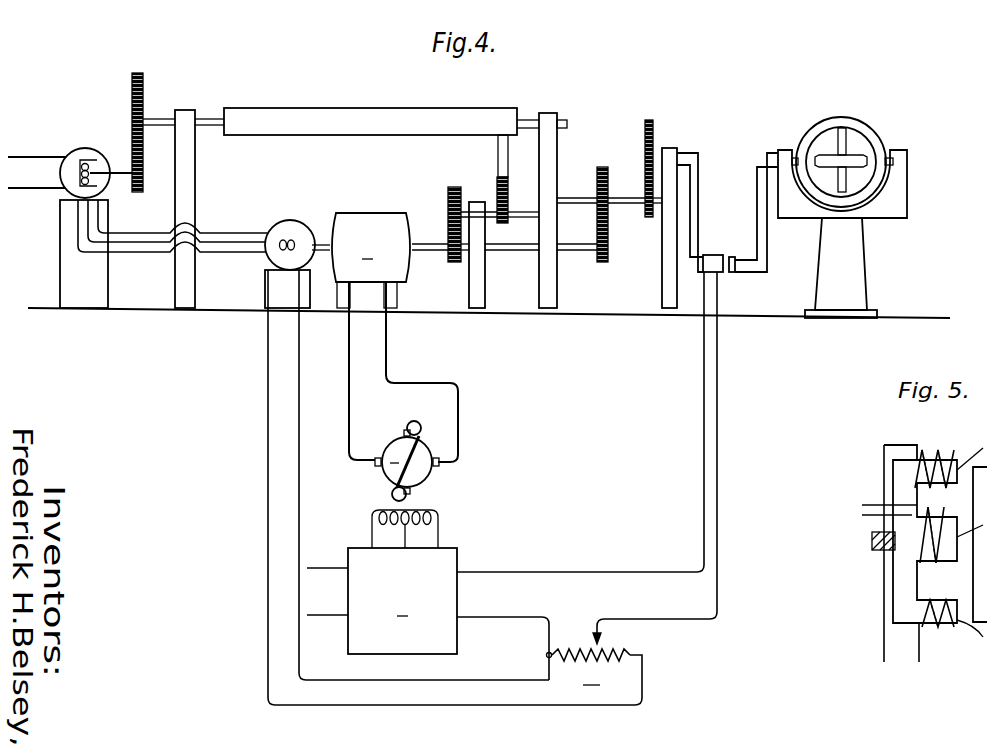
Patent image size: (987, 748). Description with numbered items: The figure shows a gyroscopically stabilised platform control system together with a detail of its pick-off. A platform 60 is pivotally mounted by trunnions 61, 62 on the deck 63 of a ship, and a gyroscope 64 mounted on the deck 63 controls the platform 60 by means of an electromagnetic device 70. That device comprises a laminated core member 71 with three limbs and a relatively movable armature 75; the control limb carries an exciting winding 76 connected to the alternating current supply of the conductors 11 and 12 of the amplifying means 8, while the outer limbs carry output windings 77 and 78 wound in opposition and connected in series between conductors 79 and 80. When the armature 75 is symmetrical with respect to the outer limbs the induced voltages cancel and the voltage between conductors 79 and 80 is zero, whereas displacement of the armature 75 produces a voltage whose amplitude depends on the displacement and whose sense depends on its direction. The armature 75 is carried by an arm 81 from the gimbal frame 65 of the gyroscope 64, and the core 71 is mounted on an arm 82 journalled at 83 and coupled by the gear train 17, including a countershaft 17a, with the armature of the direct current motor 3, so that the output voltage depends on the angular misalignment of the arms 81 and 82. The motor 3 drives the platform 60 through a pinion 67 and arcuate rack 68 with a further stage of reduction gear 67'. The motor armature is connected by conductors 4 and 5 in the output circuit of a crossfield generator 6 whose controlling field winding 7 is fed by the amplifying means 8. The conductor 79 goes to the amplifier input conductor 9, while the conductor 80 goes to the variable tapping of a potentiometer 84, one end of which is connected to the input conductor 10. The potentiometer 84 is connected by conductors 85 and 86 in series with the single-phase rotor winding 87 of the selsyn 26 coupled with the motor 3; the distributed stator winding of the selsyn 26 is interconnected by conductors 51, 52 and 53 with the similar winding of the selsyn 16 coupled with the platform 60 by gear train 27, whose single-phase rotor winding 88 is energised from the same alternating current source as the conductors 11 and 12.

In FIG. 4, the direct current electric motor 3 is at (380, 260).
In FIG. 4, the conductor 4 is at (387, 349).
In FIG. 4, the conductor 5 is at (349, 355).
In FIG. 4, the crossfield or armature reaction generator 6 is at (407, 461).
In FIG. 4, the controlling field winding 7 is at (443, 509).
In FIG. 4, the amplifying means 8 is at (402, 601).
In FIG. 4, the input conductor 9 is at (485, 571).
In FIG. 4, the input conductor 10 is at (480, 617).
In FIG. 4, the reference voltage conductor 11 is at (323, 616).
In FIG. 4, the reference voltage conductor 12 is at (318, 568).
In FIG. 4, the selsyn 16 is at (303, 225).
In FIG. 4, the gear train 17 is at (641, 255).
In FIG. 4, the countershaft 17a is at (577, 199).
In FIG. 4, the selsyn 26 is at (95, 157).
In FIG. 4, the gear train 27 is at (117, 174).
In FIG. 4, the conductor 51 is at (142, 255).
In FIG. 4, the conductor 52 is at (238, 250).
In FIG. 4, the conductor 53 is at (216, 233).
In FIG. 4, the platform 60 is at (452, 116).
In FIG. 4, the trunnion 61 is at (190, 112).
In FIG. 4, the trunnion 62 is at (552, 117).
In FIG. 4, the deck 63 is at (900, 318).
In FIG. 4, the gyroscope 64 is at (908, 139).
In FIG. 4, the gimbal frame 65 is at (813, 128).
In FIG. 4, the pinion 67 is at (500, 208).
In FIG. 4, the reduction gear 67' is at (478, 224).
In FIG. 4, the arcuate rack 68 is at (499, 168).
In FIG. 4, the electromagnetic device 70 is at (744, 298).
In FIG. 5, the electromagnetic device 70 is at (980, 652).
In FIG. 4, the laminated core member 71 is at (711, 255).
In FIG. 5, the laminated core member 71 is at (900, 580).
In FIG. 4, the armature 75 is at (735, 257).
In FIG. 5, the exciting winding 76 is at (925, 548).
In FIG. 5, the output winding 77 is at (942, 455).
In FIG. 5, the output winding 78 is at (937, 632).
In FIG. 4, the conductor 79 is at (703, 445).
In FIG. 5, the conductor 79 is at (883, 653).
In FIG. 4, the conductor 80 is at (718, 447).
In FIG. 5, the conductor 80 is at (917, 652).
In FIG. 4, the arm 81 is at (757, 205).
In FIG. 4, the arm 82 is at (698, 192).
In FIG. 5, the arm 82 is at (870, 541).
In FIG. 4, the journal 83 is at (672, 150).
In FIG. 4, the potentiometer 84 is at (589, 667).
In FIG. 4, the conductor 85 is at (299, 462).
In FIG. 4, the conductor 86 is at (268, 456).
In FIG. 4, the rotor winding 87 is at (283, 239).
In FIG. 4, the rotor winding 88 is at (74, 173).